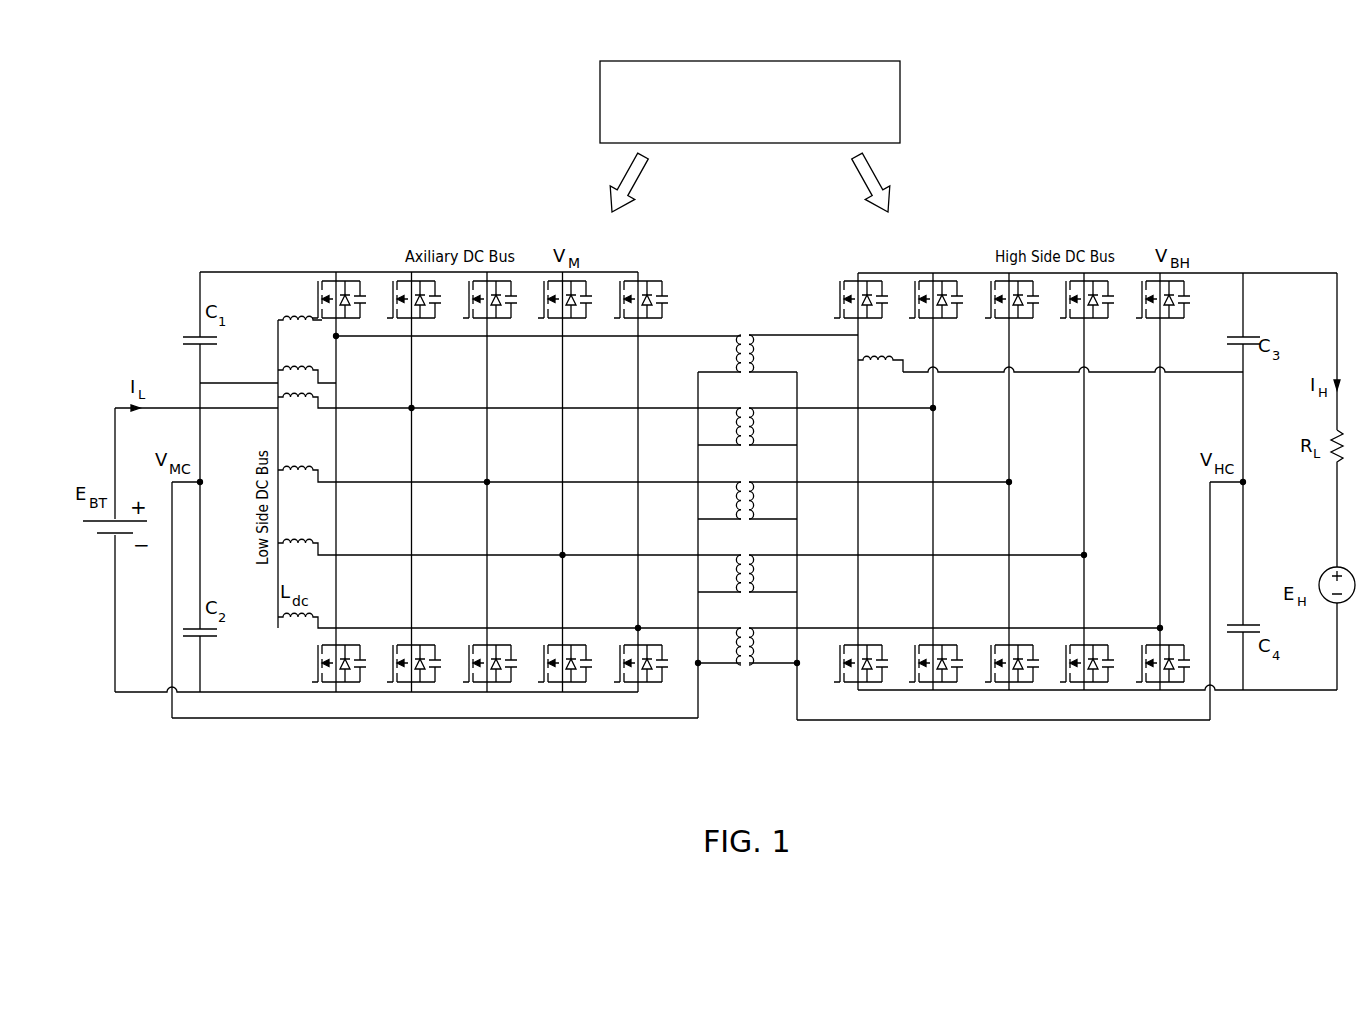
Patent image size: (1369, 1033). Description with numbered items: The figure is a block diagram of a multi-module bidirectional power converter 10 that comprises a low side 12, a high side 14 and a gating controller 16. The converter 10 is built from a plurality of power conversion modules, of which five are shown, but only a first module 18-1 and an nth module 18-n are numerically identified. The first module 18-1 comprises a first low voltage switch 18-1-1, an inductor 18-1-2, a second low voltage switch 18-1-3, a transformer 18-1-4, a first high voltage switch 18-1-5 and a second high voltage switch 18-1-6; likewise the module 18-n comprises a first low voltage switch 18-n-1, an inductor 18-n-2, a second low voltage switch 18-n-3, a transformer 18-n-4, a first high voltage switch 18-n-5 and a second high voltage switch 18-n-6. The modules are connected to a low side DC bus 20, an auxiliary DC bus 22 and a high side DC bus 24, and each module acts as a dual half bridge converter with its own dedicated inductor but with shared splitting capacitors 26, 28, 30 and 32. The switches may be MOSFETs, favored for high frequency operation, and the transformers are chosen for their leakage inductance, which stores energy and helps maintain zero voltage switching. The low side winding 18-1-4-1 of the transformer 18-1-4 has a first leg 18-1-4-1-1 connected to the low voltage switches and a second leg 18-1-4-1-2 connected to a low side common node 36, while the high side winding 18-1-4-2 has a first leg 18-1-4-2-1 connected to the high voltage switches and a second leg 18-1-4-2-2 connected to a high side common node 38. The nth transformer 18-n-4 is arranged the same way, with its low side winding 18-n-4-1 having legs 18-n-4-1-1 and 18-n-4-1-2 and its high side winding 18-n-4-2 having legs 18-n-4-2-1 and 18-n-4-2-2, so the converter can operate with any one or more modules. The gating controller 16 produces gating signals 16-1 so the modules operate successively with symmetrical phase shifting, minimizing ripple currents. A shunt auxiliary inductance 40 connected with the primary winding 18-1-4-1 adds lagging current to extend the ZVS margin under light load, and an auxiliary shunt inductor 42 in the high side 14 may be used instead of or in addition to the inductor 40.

The multi-module bidirectional power converter 10 is at (659, 761).
The low side 12 is at (596, 726).
The high side 14 is at (967, 726).
The gating controller 16 is at (900, 102).
The gating signals 16-1 is at (622, 170).
The first module 18-1 is at (376, 705).
The nth module 18-n is at (1157, 703).
The first low voltage switch 18-1-1 is at (345, 283).
The inductor 18-1-2 is at (283, 318).
The second low voltage switch 18-1-3 is at (346, 692).
The transformer 18-1-4 is at (625, 358).
The low side winding 18-1-4-1 is at (741, 352).
The high side winding 18-1-4-2 is at (752, 345).
The first leg 18-1-4-1-1 is at (696, 338).
The second leg 18-1-4-1-2 is at (700, 374).
The first leg 18-1-4-2-1 is at (806, 338).
The second leg 18-1-4-2-2 is at (798, 376).
The first high voltage switch 18-1-5 is at (888, 295).
The second high voltage switch 18-1-6 is at (868, 690).
The first low voltage switch 18-n-1 is at (648, 283).
The inductor 18-n-2 is at (320, 630).
The second low voltage switch 18-n-3 is at (642, 692).
The transformer 18-n-4 is at (750, 656).
The low side winding 18-n-4-1 is at (728, 667).
The high side winding 18-n-4-2 is at (770, 667).
The first leg 18-n-4-1-1 is at (700, 624).
The second leg 18-n-4-1-2 is at (700, 660).
The first leg 18-n-4-2-1 is at (797, 624).
The second leg 18-n-4-2-2 is at (797, 660).
The first high voltage switch 18-n-5 is at (1190, 292).
The second high voltage switch 18-n-6 is at (1170, 690).
The low side DC bus 20 is at (277, 418).
The auxiliary DC bus 22 is at (524, 272).
The high side DC bus 24 is at (969, 273).
The splitting capacitor 26 is at (193, 335).
The splitting capacitor 28 is at (208, 640).
The splitting capacitor 30 is at (1250, 335).
The splitting capacitor 32 is at (1252, 623).
The low side common node 36 is at (697, 666).
The high side common node 38 is at (798, 666).
The shunt auxiliary inductance 40 is at (283, 368).
The auxiliary shunt inductor 42 is at (905, 358).